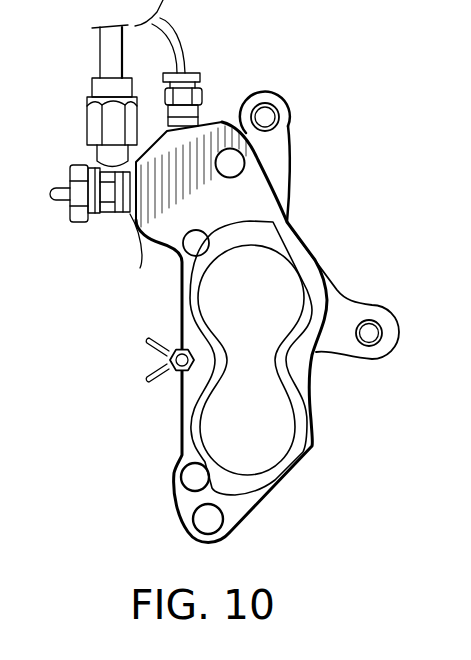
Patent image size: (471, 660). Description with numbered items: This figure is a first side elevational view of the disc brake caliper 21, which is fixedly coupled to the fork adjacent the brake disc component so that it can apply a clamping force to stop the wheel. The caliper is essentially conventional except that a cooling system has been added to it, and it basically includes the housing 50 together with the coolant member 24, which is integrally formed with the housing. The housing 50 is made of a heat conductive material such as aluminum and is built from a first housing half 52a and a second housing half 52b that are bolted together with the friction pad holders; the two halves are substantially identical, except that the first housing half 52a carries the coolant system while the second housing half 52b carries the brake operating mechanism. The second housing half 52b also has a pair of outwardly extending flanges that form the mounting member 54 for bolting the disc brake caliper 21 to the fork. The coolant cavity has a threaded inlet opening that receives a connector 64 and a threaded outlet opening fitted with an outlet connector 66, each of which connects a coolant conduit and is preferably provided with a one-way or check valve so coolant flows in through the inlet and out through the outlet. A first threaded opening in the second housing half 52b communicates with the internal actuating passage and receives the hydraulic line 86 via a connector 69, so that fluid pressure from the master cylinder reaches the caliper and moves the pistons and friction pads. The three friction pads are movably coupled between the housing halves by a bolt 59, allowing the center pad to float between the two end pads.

The disc brake caliper 21 is at (314, 257).
The coolant member 24 is at (144, 237).
The housing 50 is at (264, 200).
The first housing half 52a is at (297, 362).
The second housing half 52b is at (278, 180).
The mounting member 54 is at (272, 146).
The bolt 59 is at (170, 357).
The connector 64 is at (101, 214).
The outlet connector 66 is at (202, 92).
The connector 69 is at (97, 161).
The hydraulic line 86 is at (100, 48).